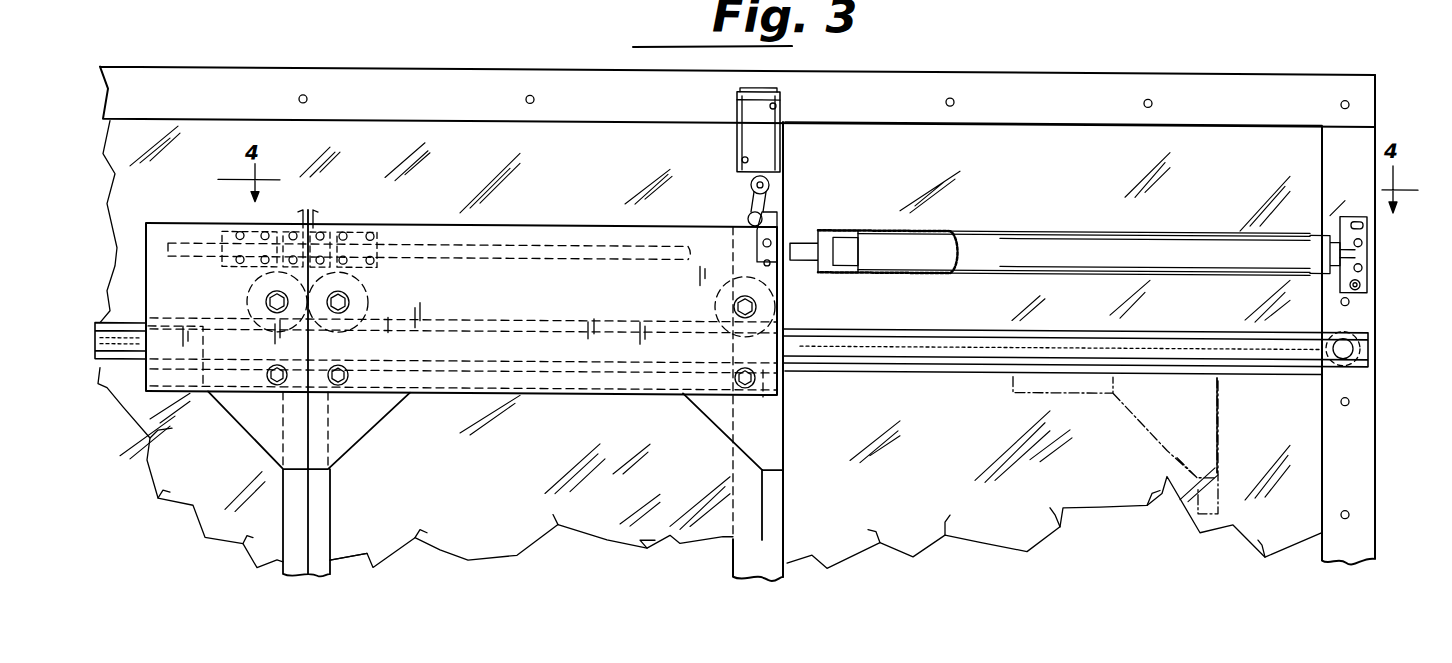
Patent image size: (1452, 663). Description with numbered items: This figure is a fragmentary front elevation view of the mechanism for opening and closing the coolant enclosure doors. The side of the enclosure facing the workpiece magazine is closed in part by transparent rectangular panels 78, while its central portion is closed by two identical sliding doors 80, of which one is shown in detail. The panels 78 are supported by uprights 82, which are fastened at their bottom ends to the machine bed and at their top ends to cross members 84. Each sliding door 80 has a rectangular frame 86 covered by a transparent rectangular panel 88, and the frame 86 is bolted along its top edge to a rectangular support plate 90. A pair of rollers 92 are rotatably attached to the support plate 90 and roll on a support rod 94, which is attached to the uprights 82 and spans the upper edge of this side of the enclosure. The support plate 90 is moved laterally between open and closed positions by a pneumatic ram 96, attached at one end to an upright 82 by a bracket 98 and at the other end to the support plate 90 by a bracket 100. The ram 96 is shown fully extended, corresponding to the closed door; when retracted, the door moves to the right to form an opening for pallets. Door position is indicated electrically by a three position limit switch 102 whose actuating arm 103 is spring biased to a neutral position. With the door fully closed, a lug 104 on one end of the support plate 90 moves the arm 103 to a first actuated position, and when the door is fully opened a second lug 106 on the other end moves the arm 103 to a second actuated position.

The transparent rectangular panel 78 is at (1000, 527).
The sliding door 80 is at (811, 415).
The upright 82 is at (1350, 447).
The cross member 84 is at (1020, 72).
The rectangular frame 86 is at (283, 505).
The transparent rectangular panel 88 is at (600, 523).
The rectangular support plate 90 is at (510, 260).
The roller 92 is at (250, 288).
The support rod 94 is at (118, 378).
The pneumatic ram 96 is at (1032, 239).
The bracket 98 is at (1365, 246).
The bracket 100 is at (255, 215).
The three position limit switch 102 is at (783, 145).
The actuating arm 103 is at (750, 189).
The lug 104 is at (785, 210).
The second lug 106 is at (305, 210).